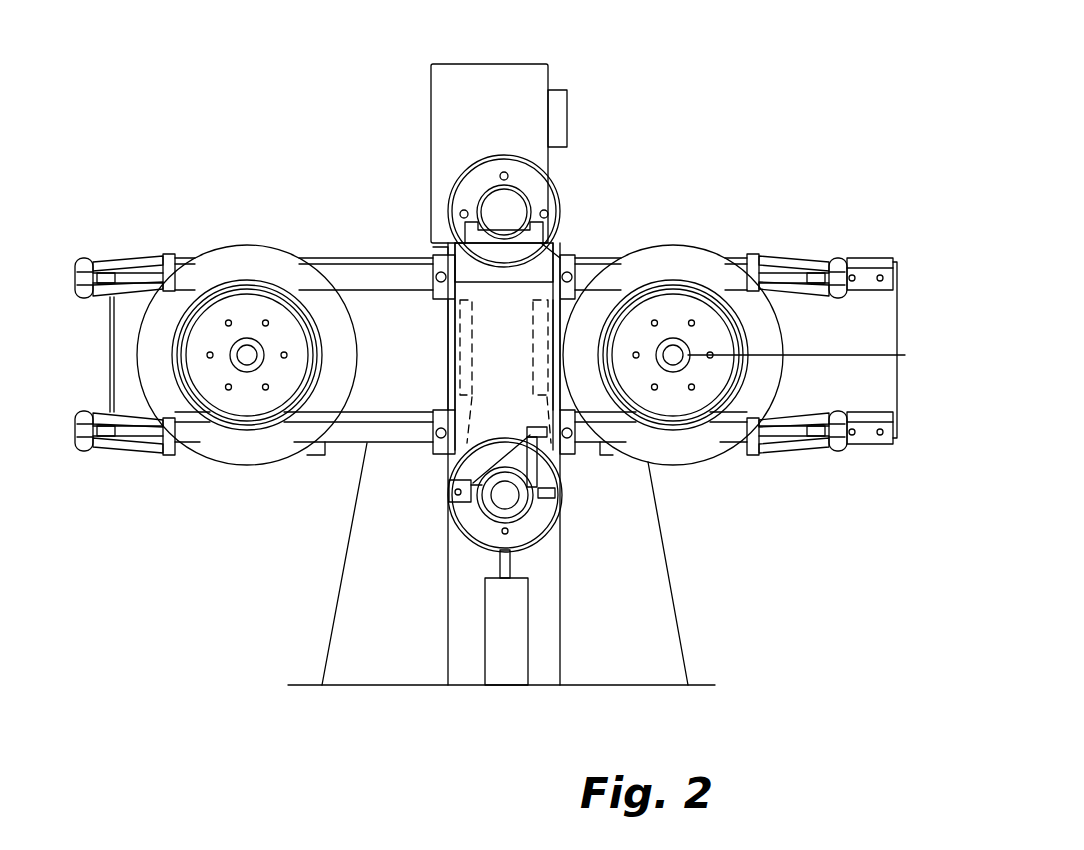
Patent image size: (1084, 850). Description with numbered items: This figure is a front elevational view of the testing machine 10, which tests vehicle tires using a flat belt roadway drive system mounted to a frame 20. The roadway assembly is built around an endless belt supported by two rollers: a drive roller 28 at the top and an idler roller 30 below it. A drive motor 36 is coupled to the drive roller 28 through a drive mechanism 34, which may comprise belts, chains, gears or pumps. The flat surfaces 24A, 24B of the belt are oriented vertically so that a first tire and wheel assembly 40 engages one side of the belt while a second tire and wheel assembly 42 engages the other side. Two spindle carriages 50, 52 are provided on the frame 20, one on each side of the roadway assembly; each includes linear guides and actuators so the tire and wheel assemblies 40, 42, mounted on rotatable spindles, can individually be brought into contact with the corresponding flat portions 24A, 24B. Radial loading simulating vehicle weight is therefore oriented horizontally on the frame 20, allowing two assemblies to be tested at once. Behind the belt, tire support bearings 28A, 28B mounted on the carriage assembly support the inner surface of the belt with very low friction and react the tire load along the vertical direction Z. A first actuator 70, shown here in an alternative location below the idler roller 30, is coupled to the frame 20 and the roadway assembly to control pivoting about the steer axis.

The testing machine 10 is at (730, 115).
The frame 20 is at (678, 622).
The flat surface of the belt 24A is at (567, 312).
The flat surface of the belt 24B is at (448, 313).
The drive roller 28 is at (536, 194).
The tire support bearing 28A is at (567, 448).
The tire support bearing 28B is at (458, 458).
The idler roller 30 is at (531, 527).
The drive mechanism 34 is at (566, 112).
The drive motor 36 is at (502, 64).
The first tire and wheel assembly 40 is at (754, 238).
The second tire and wheel assembly 42 is at (250, 238).
The spindle carriage 50 is at (706, 238).
The spindle carriage 52 is at (163, 240).
The first actuator 70 is at (530, 640).
The vertical direction Z is at (807, 355).